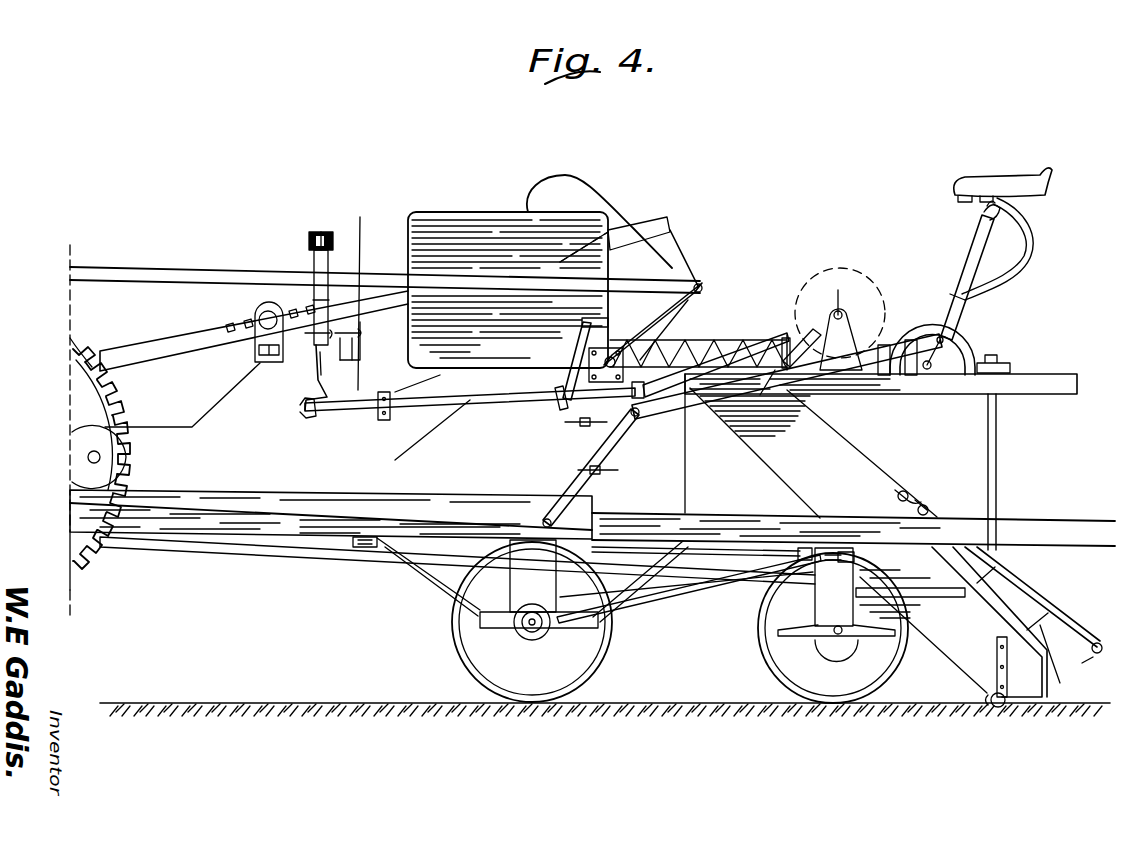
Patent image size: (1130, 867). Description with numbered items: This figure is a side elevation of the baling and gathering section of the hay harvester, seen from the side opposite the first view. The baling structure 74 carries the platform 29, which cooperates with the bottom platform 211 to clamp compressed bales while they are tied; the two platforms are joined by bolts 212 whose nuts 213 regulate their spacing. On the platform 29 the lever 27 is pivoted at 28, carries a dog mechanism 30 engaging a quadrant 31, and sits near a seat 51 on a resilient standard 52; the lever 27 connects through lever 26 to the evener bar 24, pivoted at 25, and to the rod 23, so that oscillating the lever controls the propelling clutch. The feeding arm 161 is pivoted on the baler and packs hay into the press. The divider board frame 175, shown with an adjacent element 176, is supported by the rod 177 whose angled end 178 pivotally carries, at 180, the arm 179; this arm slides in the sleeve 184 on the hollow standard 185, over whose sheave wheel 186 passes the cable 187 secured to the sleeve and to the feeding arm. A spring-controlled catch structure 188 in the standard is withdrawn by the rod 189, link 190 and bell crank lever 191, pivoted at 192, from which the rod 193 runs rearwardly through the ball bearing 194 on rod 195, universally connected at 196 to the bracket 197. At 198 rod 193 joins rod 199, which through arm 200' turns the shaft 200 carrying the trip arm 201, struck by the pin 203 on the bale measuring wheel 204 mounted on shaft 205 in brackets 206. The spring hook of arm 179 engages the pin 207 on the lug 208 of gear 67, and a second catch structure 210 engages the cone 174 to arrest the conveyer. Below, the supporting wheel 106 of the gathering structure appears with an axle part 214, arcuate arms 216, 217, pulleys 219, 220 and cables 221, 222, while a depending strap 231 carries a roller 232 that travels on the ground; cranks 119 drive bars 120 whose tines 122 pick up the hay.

The rod 23 is at (340, 500).
The evener bar 24 is at (600, 448).
The pivot 25 is at (563, 498).
The lever 26 is at (790, 380).
The lever 27 is at (968, 298).
The pivot 28 is at (930, 370).
The platform 29 is at (1045, 392).
The dog mechanism 30 is at (982, 232).
The quadrant 31 is at (942, 333).
The seat 51 is at (1012, 185).
The seat spring 52 is at (1030, 240).
The gear 67 is at (70, 365).
The baling structure 74 is at (361, 286).
The supporting wheel 106 is at (835, 703).
The cranks 119 is at (910, 500).
The bars 120 is at (1030, 600).
The tines 122 is at (1067, 662).
The feeding arm 161 is at (143, 340).
The cone or lug 174 is at (240, 372).
The frame 175 is at (777, 330).
The conveyor 176 is at (710, 348).
The rod 177 is at (592, 355).
The angled end 178 is at (682, 255).
The arm 179 is at (477, 268).
The pivot 180 is at (662, 315).
The sleeve 184 is at (313, 262).
The standard 185 is at (313, 298).
The sheave wheel 186 is at (321, 232).
The cable 187 is at (310, 238).
The catch structure 188 is at (330, 310).
The rod 189 is at (316, 350).
The link 190 is at (315, 385).
The bell crank lever 191 is at (305, 410).
The pivot 192 is at (330, 400).
The rod 193 is at (466, 400).
The bearing 194 is at (448, 440).
The rod 195 is at (565, 372).
The universal connection 196 is at (590, 322).
The supporting bracket 197 is at (600, 320).
The pivot 198 is at (645, 395).
The rod 199 is at (705, 392).
The shaft 200 is at (755, 453).
The arm 200' is at (762, 341).
The trip arm 201 is at (815, 335).
The pin 203 is at (835, 290).
The bale measuring wheel 204 is at (848, 282).
The shaft 205 is at (838, 290).
The supporting brackets 206 is at (855, 345).
The pin 207 is at (88, 457).
The lug 208 is at (80, 425).
The second catch structure 210 is at (345, 360).
The bottom platform 211 is at (1010, 517).
The bolts 212 is at (996, 462).
The nuts 213 is at (1000, 362).
The axle bracket 214 is at (805, 630).
The arcuate arm 216 is at (790, 620).
The arcuate arm 217 is at (905, 610).
The pulley 219 is at (805, 548).
The pulley 220 is at (845, 552).
The cable 221 is at (733, 550).
The cable 222 is at (650, 605).
The depending strap 231 is at (997, 677).
The rollers 232 is at (1000, 707).